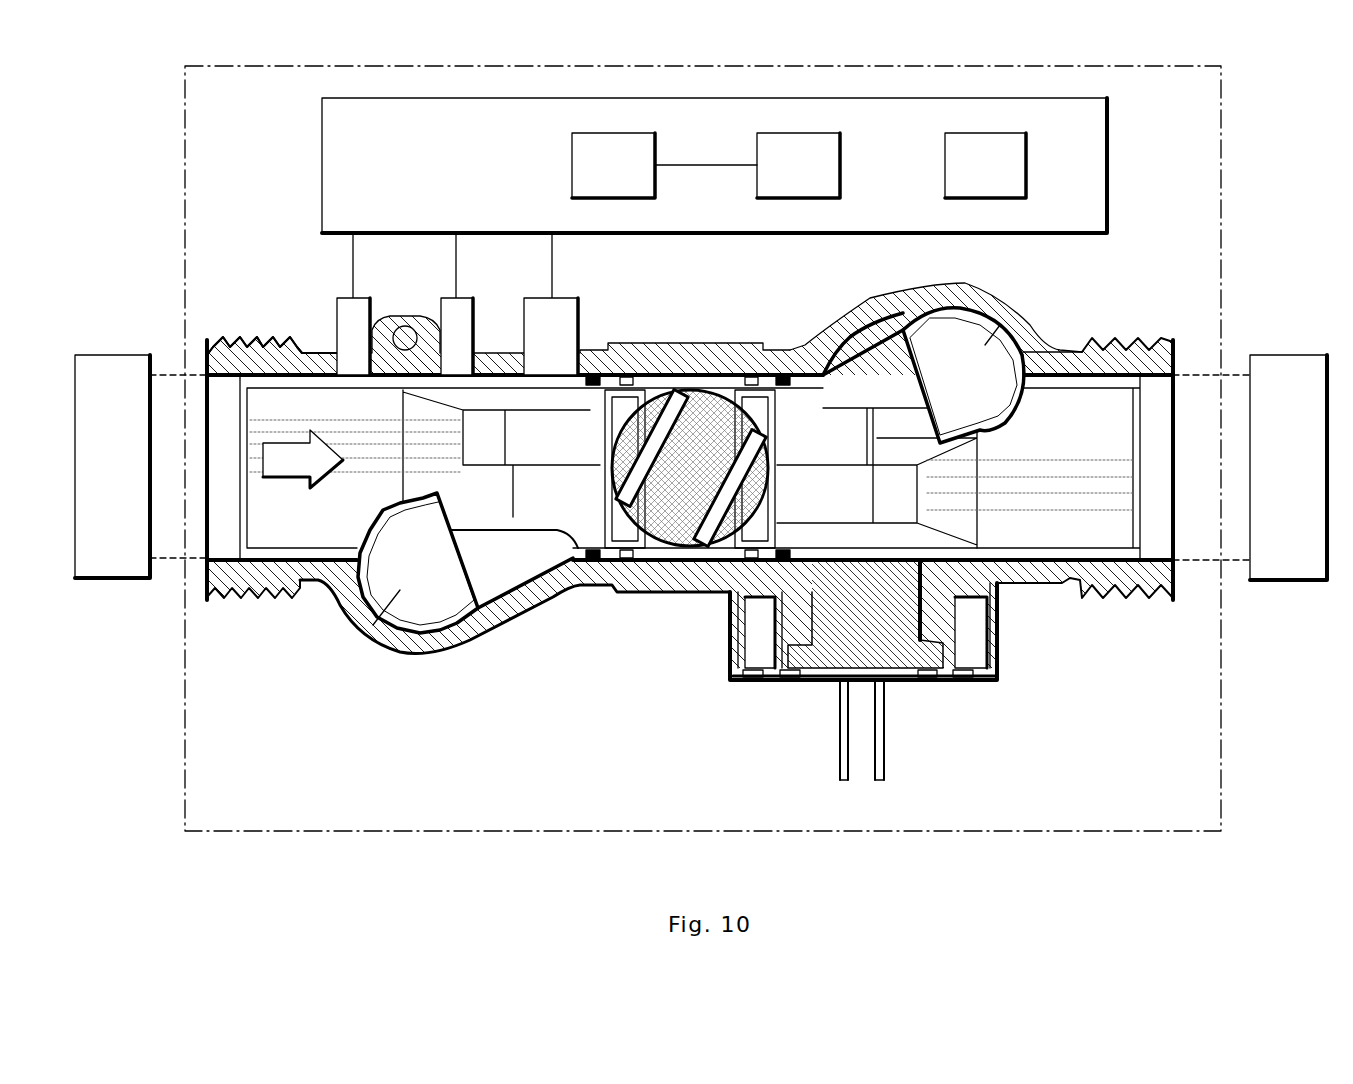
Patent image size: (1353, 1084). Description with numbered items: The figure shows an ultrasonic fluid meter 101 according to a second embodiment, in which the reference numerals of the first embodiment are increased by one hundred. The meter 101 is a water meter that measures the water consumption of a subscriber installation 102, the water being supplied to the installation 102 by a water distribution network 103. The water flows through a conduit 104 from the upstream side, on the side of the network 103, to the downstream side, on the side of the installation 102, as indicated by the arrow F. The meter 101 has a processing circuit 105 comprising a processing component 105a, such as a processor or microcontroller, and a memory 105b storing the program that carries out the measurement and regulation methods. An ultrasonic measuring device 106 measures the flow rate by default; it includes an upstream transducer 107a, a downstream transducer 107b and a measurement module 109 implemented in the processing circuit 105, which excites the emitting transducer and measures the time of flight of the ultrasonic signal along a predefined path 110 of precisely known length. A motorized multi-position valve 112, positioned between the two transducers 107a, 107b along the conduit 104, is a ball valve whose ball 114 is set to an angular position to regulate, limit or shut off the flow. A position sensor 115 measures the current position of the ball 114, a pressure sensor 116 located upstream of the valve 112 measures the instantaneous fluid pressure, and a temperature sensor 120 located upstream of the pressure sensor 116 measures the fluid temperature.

The ultrasonic fluid meter 101 is at (1222, 165).
The installation 102 is at (1250, 467).
The water distribution network 103 is at (141, 466).
The conduit 104 is at (245, 345).
The processing circuit 105 is at (755, 198).
The processing component 105a is at (613, 165).
The memory 105b is at (798, 165).
The ultrasonic measuring device 106 is at (1058, 319).
The upstream transducer 107a is at (387, 590).
The downstream transducer 107b is at (1000, 322).
The measurement module 109 is at (985, 165).
The predefined path 110 is at (582, 463).
The valve 112 is at (658, 597).
The ball 114 is at (706, 372).
The position sensor 115 is at (579, 312).
The pressure sensor 116 is at (441, 320).
The temperature sensor 120 is at (338, 320).